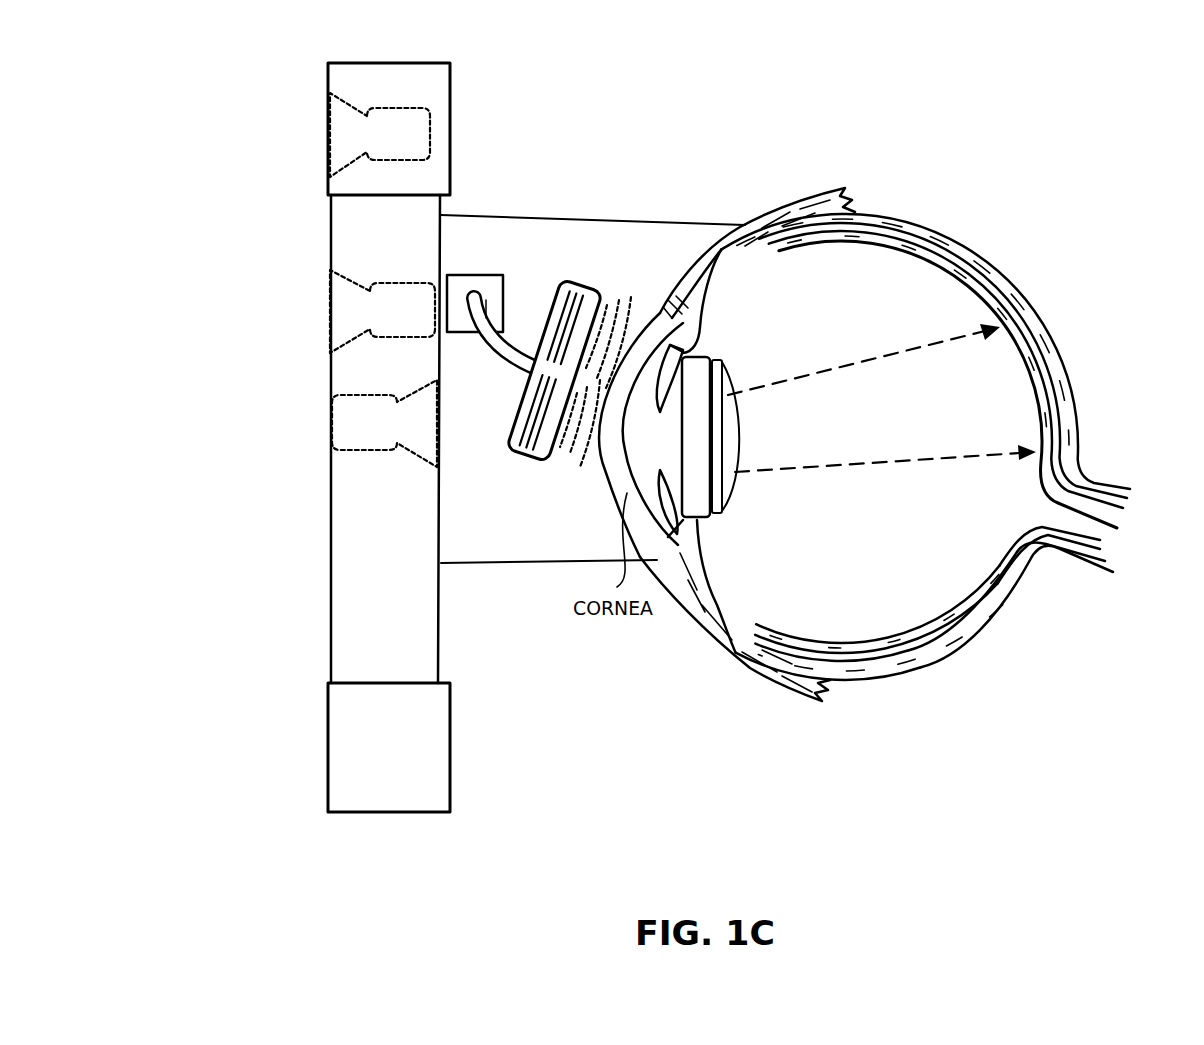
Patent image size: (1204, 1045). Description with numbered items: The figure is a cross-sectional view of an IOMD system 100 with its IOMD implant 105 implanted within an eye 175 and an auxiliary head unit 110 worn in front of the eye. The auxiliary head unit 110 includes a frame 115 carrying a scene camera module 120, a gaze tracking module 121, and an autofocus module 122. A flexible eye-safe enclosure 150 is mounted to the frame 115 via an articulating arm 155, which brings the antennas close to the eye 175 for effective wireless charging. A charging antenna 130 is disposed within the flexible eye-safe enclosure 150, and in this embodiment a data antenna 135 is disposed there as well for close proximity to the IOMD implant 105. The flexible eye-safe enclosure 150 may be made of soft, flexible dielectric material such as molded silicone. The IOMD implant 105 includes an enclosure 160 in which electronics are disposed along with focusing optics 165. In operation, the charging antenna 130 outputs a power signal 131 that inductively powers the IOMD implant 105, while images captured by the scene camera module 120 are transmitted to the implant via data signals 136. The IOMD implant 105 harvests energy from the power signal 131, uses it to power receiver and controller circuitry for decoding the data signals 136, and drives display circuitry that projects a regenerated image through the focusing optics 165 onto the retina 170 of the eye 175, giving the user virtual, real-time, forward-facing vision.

The IOMD system 100 is at (1074, 121).
The IOMD implant 105 is at (779, 459).
The auxiliary head unit 110 is at (286, 359).
The frame 115 is at (473, 577).
The scene camera module 120 is at (380, 135).
The gaze tracking module 121 is at (384, 423).
The autofocus module 122 is at (382, 311).
The charging antenna 130 is at (538, 395).
The power signal 131 is at (577, 467).
The data antenna 135 is at (565, 327).
The data signals 136 is at (630, 297).
The flexible eye-safe enclosure 150 is at (623, 354).
The articulating arm 155 is at (492, 276).
The enclosure 160 is at (708, 366).
The focusing optics 165 is at (738, 487).
The retina 170 is at (1038, 380).
The eye 175 is at (882, 376).